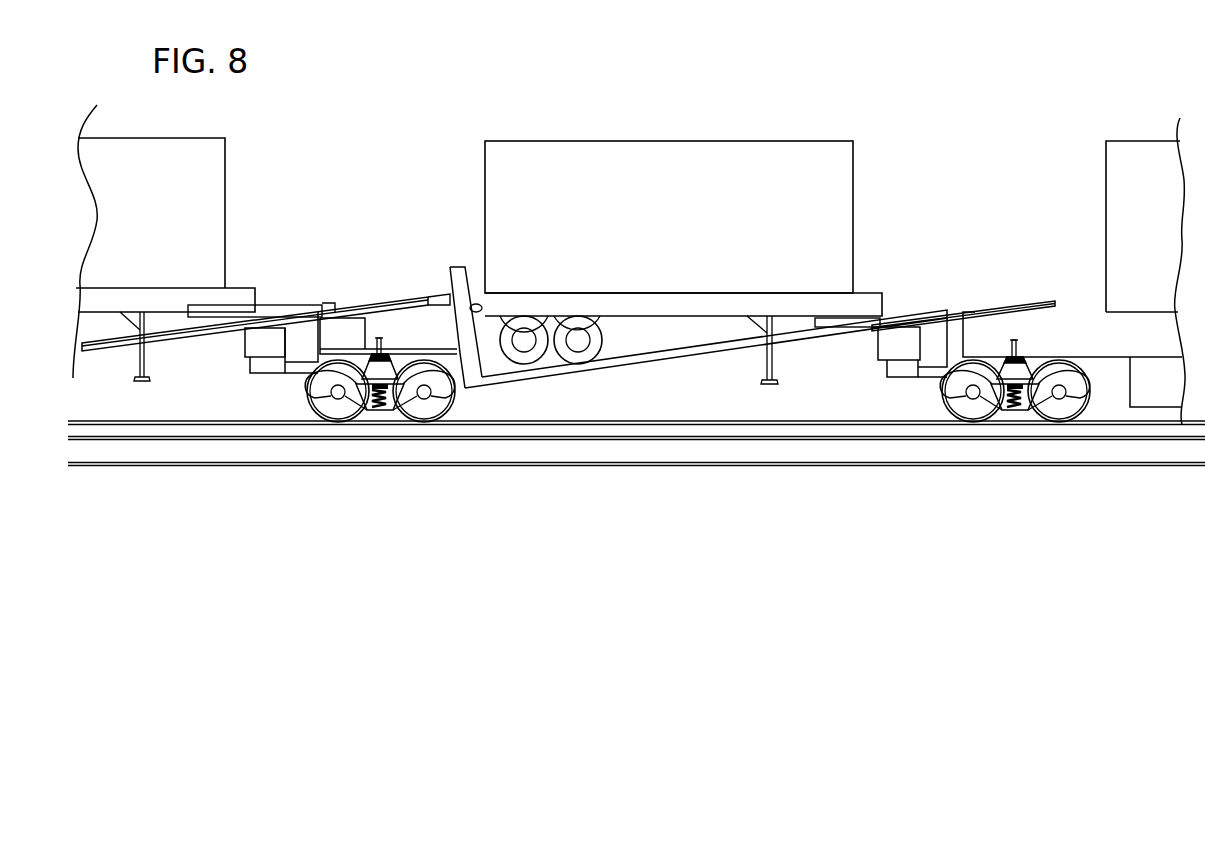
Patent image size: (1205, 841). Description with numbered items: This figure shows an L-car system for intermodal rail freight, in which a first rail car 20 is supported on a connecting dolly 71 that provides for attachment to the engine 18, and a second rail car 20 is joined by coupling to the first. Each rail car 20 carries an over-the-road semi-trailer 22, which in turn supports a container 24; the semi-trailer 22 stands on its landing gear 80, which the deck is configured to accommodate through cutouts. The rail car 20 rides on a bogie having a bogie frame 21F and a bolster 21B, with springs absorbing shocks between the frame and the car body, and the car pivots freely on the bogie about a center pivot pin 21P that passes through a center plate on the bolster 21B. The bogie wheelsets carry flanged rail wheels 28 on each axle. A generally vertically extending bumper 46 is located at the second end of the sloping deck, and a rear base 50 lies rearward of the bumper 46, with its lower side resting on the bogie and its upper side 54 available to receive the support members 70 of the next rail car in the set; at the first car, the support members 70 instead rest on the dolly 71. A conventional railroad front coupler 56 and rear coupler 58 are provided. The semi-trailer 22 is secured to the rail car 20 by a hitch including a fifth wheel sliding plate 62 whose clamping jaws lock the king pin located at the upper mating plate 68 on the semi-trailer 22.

The engine 18 is at (1130, 238).
The rail car 20 is at (692, 363).
The center pivot pin 21P is at (377, 334).
The bolster 21B is at (393, 362).
The bogie chassis or frame 21F is at (328, 380).
The semi-trailer 22 is at (866, 294).
The container 24 is at (225, 172).
The flanged rail wheels 28 is at (602, 338).
The bumper 46 is at (462, 273).
The rear base 50 is at (375, 318).
The upper side 54 is at (446, 308).
The front coupler 56 is at (255, 373).
The rear coupler 58 is at (932, 374).
The fifth wheel sliding plate 62 is at (207, 319).
The upper mating plate 68 is at (199, 314).
The support member 70 is at (1034, 306).
The connecting dolly 71 is at (980, 340).
The landing gear 80 is at (147, 358).